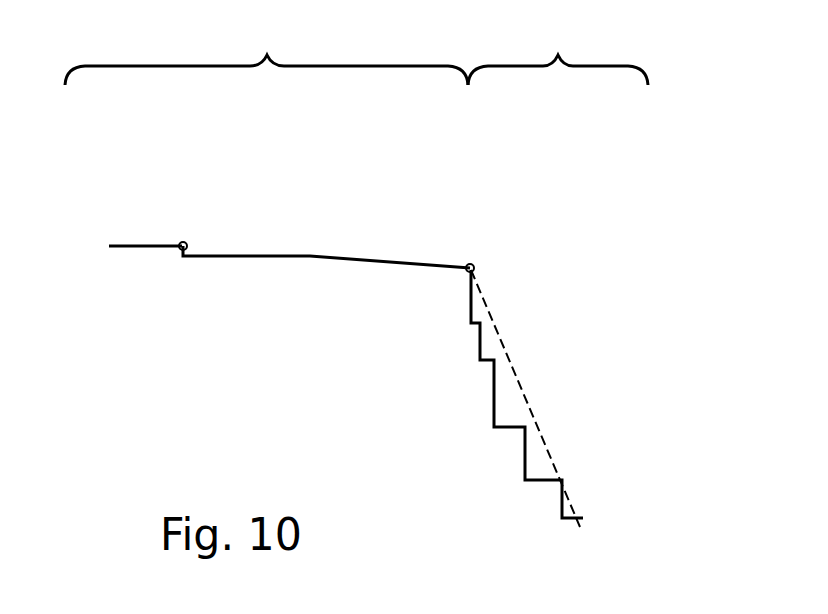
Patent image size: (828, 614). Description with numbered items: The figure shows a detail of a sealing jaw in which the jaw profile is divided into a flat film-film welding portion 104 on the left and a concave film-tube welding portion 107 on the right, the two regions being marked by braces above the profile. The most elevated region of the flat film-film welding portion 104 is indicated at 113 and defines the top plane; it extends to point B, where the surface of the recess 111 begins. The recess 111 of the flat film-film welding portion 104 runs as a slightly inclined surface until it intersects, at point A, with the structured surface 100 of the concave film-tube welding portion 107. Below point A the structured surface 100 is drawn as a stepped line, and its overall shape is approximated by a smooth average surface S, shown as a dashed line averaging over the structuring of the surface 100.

The flat film-film welding portion 104 is at (266, 47).
The concave film-tube welding portion 107 is at (558, 47).
The first line segment 113 is at (147, 246).
The recess 111 is at (310, 255).
The structured surface 100 is at (525, 427).
The point A is at (473, 263).
The point B is at (188, 242).
The smooth average surface S is at (533, 465).